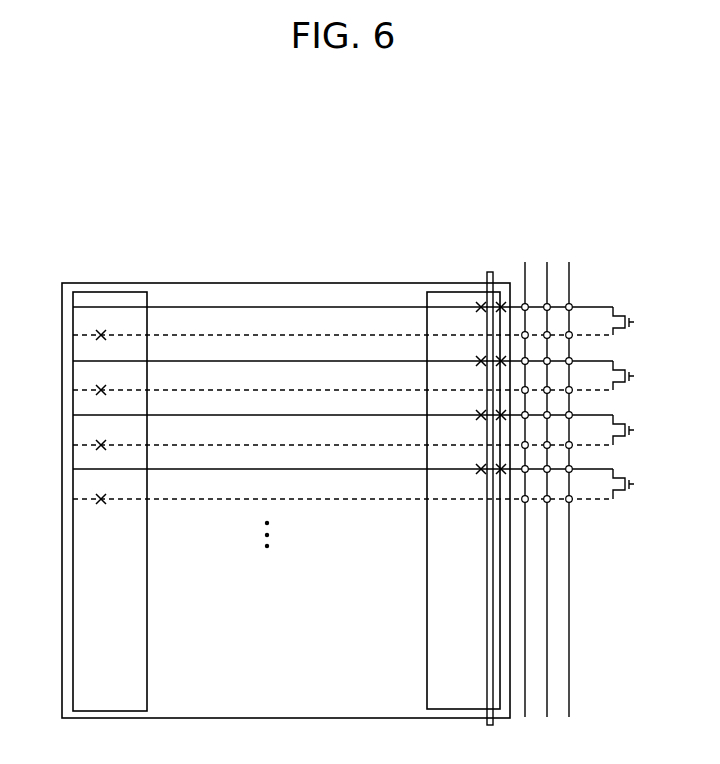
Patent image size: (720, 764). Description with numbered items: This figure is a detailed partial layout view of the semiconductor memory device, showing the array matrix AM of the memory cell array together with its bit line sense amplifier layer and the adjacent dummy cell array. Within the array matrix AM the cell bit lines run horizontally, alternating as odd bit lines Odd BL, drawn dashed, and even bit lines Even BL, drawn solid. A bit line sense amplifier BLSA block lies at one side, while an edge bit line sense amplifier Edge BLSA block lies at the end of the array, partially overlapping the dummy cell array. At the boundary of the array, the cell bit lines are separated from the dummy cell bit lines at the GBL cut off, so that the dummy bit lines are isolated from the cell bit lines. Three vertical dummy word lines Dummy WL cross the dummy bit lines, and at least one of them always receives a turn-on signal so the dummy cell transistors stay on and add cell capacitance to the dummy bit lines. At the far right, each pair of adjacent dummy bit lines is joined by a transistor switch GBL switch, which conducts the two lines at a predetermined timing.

The array matrix AM is at (202, 283).
The bit line sense amplifier BLSA is at (110, 501).
The edge bit line sense amplifier Edge BLSA is at (463, 500).
The element GBL cut off is at (490, 272).
The dummy word line Dummy WL is at (525, 718).
The transistor switch GBL switch is at (638, 403).
The odd-numbered cell bit line Odd BL is at (51, 578).
The even-numbered cell bit line Even BL is at (51, 705).